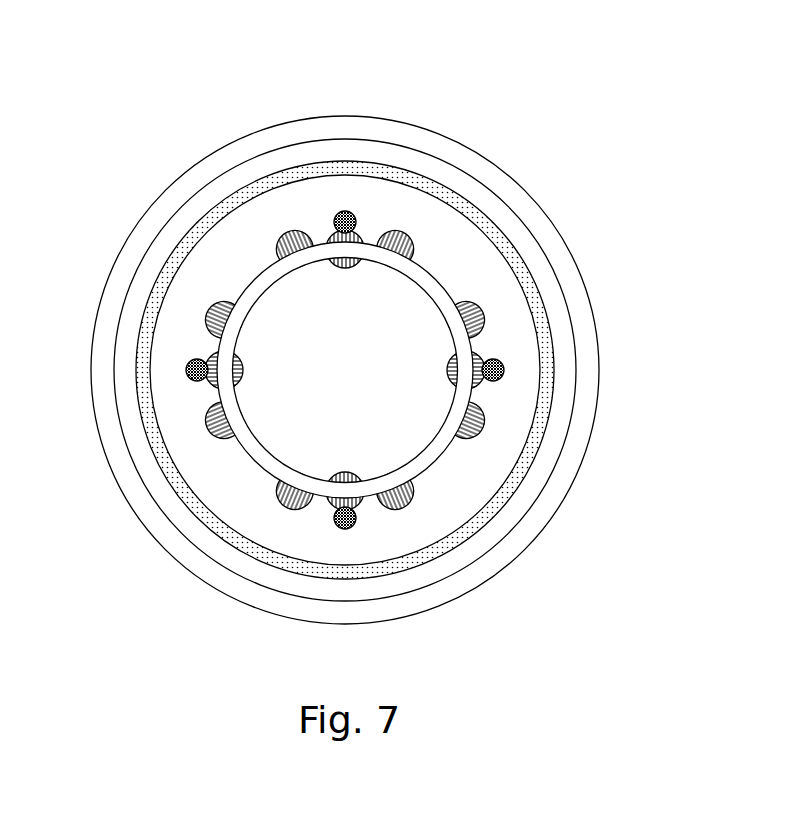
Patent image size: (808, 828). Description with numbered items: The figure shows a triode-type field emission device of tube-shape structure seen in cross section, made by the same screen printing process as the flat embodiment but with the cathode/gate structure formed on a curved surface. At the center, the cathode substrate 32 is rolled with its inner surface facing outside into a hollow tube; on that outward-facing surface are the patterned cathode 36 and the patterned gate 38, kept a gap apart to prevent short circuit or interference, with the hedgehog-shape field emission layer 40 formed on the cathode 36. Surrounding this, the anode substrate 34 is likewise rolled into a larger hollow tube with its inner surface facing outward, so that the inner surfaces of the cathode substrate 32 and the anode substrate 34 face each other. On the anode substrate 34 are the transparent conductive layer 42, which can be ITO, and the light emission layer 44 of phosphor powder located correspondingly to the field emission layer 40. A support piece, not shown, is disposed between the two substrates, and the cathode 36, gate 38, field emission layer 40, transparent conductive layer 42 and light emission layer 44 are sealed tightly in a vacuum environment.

The cathode substrate 32 is at (440, 303).
The anode substrate 34 is at (588, 387).
The cathode 36 is at (358, 233).
The gate 38 is at (283, 242).
The hedgehog-shape field emission layer 40 is at (343, 220).
The transparent conductive layer 42 is at (498, 523).
The light emission layer 44 is at (533, 440).